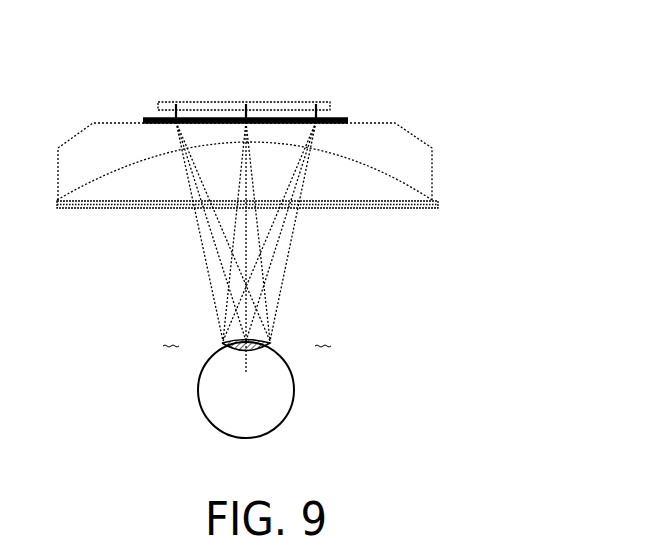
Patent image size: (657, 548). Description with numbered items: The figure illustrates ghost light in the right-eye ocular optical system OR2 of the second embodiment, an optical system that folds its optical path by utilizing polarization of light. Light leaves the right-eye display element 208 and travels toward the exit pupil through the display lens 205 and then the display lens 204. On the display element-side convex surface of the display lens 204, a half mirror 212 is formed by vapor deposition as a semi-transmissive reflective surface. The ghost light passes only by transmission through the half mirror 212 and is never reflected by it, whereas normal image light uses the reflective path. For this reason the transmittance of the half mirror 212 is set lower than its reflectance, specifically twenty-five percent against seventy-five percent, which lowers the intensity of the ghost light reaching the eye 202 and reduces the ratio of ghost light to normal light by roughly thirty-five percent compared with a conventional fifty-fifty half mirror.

The eye 202 is at (278, 392).
The display lens 204 is at (398, 193).
The display lens 205 is at (425, 173).
The right-eye display element 208 is at (313, 102).
The half mirror 212 is at (108, 173).
The right-eye ocular optical system OR2 is at (490, 163).